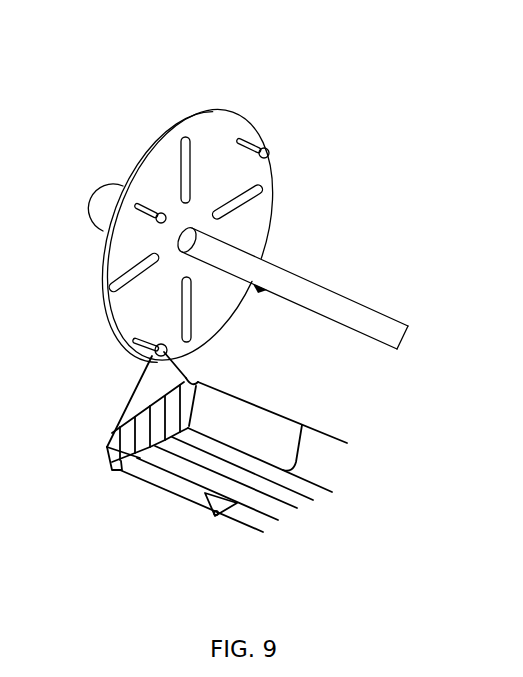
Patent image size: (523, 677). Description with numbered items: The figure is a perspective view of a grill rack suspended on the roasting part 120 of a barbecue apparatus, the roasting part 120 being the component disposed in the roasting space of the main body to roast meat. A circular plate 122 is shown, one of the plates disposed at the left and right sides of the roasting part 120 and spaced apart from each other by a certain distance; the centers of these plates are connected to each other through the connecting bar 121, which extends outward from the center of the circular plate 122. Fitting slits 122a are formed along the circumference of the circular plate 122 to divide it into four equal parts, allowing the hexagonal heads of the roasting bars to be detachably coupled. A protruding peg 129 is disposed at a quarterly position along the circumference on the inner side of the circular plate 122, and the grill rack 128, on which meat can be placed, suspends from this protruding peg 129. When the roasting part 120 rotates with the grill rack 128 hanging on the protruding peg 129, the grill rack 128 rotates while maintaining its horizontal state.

The roasting part 120 is at (305, 116).
The connecting bar 121 is at (323, 288).
The circular plate 122 is at (118, 243).
The fitting slit 122a is at (111, 290).
The grill rack 128 is at (190, 474).
The protruding peg 129 is at (134, 342).